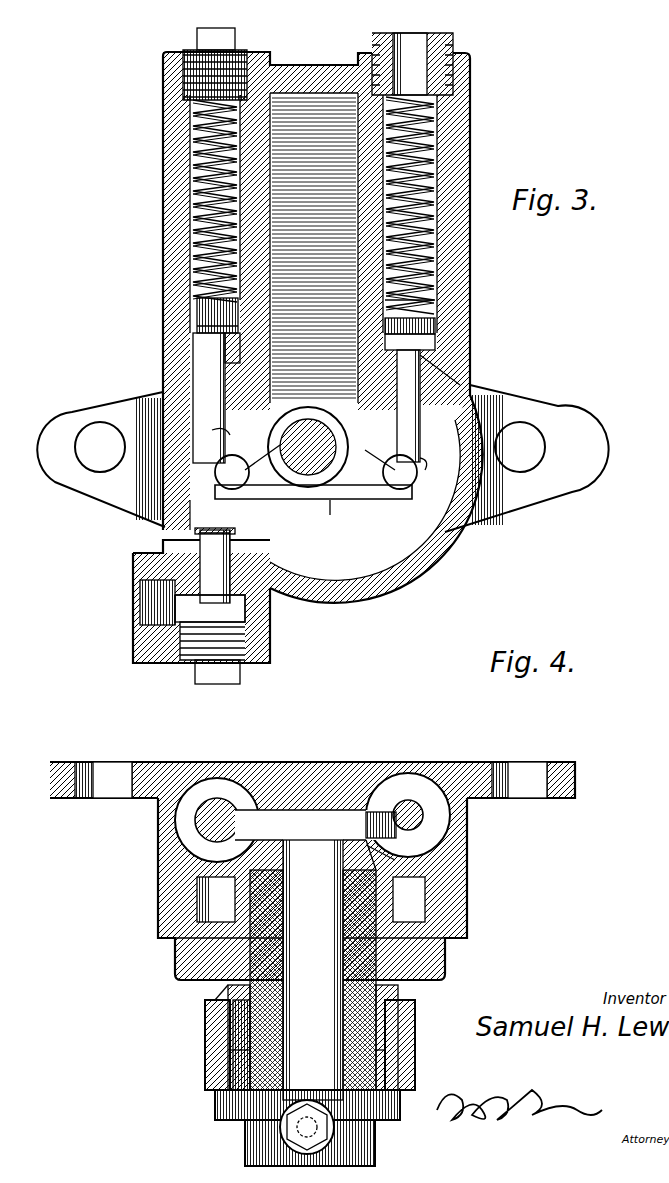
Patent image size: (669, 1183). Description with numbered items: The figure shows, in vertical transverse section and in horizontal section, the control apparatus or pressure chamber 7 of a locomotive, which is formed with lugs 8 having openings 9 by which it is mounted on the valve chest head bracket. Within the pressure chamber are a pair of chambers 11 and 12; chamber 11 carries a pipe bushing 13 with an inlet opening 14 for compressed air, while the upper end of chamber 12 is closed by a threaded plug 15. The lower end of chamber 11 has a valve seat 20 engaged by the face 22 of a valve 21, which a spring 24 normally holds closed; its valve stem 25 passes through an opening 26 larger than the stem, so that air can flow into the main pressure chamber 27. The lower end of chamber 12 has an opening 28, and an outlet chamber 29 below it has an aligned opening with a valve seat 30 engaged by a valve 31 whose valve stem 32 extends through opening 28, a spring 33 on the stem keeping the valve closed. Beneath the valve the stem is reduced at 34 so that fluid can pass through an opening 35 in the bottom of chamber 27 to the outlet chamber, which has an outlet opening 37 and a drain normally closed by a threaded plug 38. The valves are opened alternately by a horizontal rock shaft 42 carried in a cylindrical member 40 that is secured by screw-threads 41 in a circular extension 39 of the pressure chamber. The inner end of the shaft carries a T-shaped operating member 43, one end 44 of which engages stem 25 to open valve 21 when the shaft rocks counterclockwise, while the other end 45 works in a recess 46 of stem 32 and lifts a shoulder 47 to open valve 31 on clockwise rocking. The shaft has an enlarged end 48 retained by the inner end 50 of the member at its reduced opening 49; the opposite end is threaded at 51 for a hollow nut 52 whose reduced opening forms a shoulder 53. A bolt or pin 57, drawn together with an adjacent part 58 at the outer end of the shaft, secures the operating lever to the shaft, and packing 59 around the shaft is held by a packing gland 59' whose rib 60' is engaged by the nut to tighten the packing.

In FIG. 3, the control apparatus or pressure chamber 7 is at (163, 312).
In FIG. 3, the lugs 8 is at (120, 410).
In FIG. 4, the lugs 8 is at (60, 765).
In FIG. 3, the openings 9 is at (88, 428).
In FIG. 4, the openings 9 is at (100, 775).
In FIG. 3, the chamber 11 is at (437, 195).
In FIG. 3, the chamber 12 is at (193, 205).
In FIG. 3, the pipe bushing 13 is at (455, 50).
In FIG. 3, the opening 14 is at (408, 45).
In FIG. 3, the threaded plug 15 is at (238, 48).
In FIG. 3, the valve seat 20 is at (425, 370).
In FIG. 3, the valve 21 is at (430, 335).
In FIG. 3, the face 22 is at (438, 345).
In FIG. 3, the spring 24 is at (435, 245).
In FIG. 3, the valve stem 25 is at (433, 463).
In FIG. 4, the valve stem 25 is at (420, 800).
In FIG. 3, the opening 26 is at (462, 382).
In FIG. 3, the main pressure chamber 27 is at (320, 135).
In FIG. 3, the opening 28 is at (240, 390).
In FIG. 3, the outlet chamber 29 is at (246, 612).
In FIG. 3, the valve seat 30 is at (232, 548).
In FIG. 3, the valve 31 is at (240, 532).
In FIG. 3, the valve stem 32 is at (232, 360).
In FIG. 4, the valve stem 32 is at (213, 778).
In FIG. 3, the spring 33 is at (193, 256).
In FIG. 3, the reduced portion of stem 34 is at (208, 595).
In FIG. 3, the opening 35 is at (235, 558).
In FIG. 3, the outlet opening 37 is at (140, 604).
In FIG. 3, the threaded plug 38 is at (238, 668).
In FIG. 4, the circular extension 39 is at (467, 903).
In FIG. 4, the cylindrical member 40 is at (446, 960).
In FIG. 4, the screw-threads 41 is at (445, 895).
In FIG. 3, the rock shaft 42 is at (318, 425).
In FIG. 4, the rock shaft 42 is at (398, 1002).
In FIG. 3, the T-shaped operating member 43 is at (298, 500).
In FIG. 3, the end of T-shaped member 44 is at (403, 492).
In FIG. 4, the end of T-shaped member 44 is at (408, 795).
In FIG. 3, the end of T-shaped member 45 is at (240, 490).
In FIG. 4, the end of T-shaped member 45 is at (240, 805).
In FIG. 3, the recess 46 is at (185, 522).
In FIG. 3, the shoulder 47 is at (228, 440).
In FIG. 3, the enlarged end of rock shaft 48 is at (333, 517).
In FIG. 4, the enlarged end of rock shaft 48 is at (310, 815).
In FIG. 4, the reduced opening 49 is at (386, 852).
In FIG. 4, the inner end of cylindrical member 50 is at (375, 815).
In FIG. 4, the threads 51 is at (228, 990).
In FIG. 4, the hollow nut 52 is at (205, 1043).
In FIG. 4, the shoulder 53 is at (415, 1068).
In FIG. 4, the bolt or pin 57 is at (255, 1153).
In FIG. 4, the bolt 58 is at (285, 1128).
In FIG. 4, the packing 59 is at (311, 1008).
In FIG. 4, the packing gland 59' is at (204, 1045).
In FIG. 4, the rib 60' is at (289, 1105).